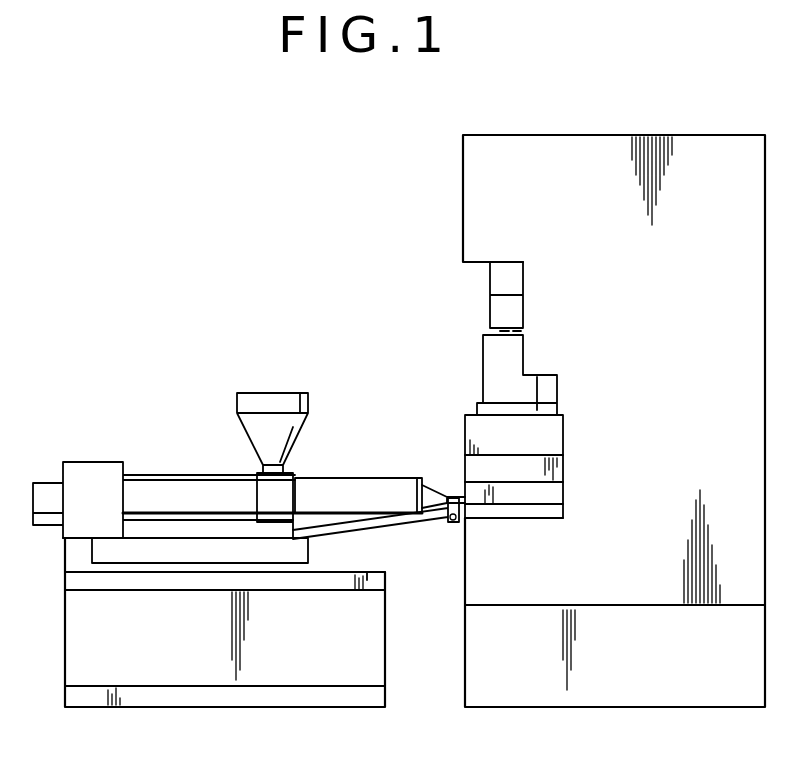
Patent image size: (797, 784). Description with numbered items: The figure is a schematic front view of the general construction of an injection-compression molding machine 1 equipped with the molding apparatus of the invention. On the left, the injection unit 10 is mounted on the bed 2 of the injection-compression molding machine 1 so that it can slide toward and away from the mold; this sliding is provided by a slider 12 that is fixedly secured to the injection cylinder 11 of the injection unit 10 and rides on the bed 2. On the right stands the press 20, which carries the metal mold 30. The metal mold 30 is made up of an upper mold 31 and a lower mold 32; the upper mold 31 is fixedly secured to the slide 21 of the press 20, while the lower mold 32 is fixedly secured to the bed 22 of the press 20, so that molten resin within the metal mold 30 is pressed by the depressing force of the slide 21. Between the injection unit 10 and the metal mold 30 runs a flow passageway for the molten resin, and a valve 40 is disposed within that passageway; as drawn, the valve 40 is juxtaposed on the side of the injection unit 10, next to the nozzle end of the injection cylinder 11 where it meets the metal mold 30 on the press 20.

The injection-compression molding machine 1 is at (183, 695).
The bed 2 is at (73, 580).
The injection unit 10 is at (330, 490).
The injection cylinder 11 is at (212, 473).
The slider 12 is at (103, 555).
The press 20 is at (690, 140).
The slide 21 is at (490, 348).
The bed 22 is at (538, 513).
The metal mold 30 is at (467, 420).
The upper mold 31 is at (465, 440).
The lower mold 32 is at (550, 495).
The valve 40 is at (450, 522).